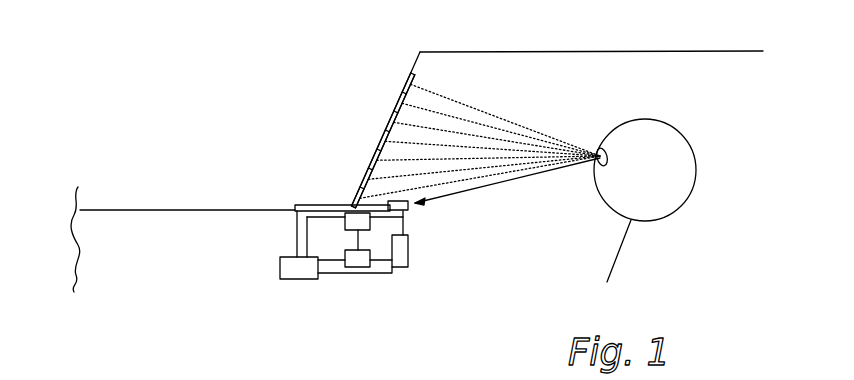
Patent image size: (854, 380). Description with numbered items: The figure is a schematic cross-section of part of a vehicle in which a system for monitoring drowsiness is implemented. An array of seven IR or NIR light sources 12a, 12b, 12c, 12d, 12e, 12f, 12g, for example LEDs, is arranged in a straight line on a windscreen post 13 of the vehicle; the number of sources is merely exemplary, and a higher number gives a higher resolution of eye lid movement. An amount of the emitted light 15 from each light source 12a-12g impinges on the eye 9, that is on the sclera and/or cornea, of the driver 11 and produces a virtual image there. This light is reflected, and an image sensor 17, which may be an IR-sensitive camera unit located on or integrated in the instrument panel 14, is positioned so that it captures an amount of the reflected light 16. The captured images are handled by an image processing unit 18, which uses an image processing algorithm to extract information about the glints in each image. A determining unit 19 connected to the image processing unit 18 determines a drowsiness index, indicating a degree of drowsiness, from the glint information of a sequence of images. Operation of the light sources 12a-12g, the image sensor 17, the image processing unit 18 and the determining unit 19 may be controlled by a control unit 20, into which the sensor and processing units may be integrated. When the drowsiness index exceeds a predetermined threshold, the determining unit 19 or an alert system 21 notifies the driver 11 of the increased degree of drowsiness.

The eye 9 is at (601, 148).
The driver 11 is at (682, 142).
The light source 12a is at (410, 74).
The light source 12b is at (401, 96).
The light source 12c is at (391, 116).
The light source 12d is at (382, 136).
The light source 12e is at (372, 155).
The light source 12f is at (362, 176).
The light source 12g is at (351, 198).
The windscreen post 13 is at (428, 64).
The instrument panel 14 is at (377, 278).
The emitted light 15 is at (478, 104).
The reflected light 16 is at (500, 187).
The image sensor 17 is at (409, 210).
The image processing unit 18 is at (348, 223).
The determining unit 19 is at (358, 274).
The control unit 20 is at (292, 280).
The alert system 21 is at (402, 268).